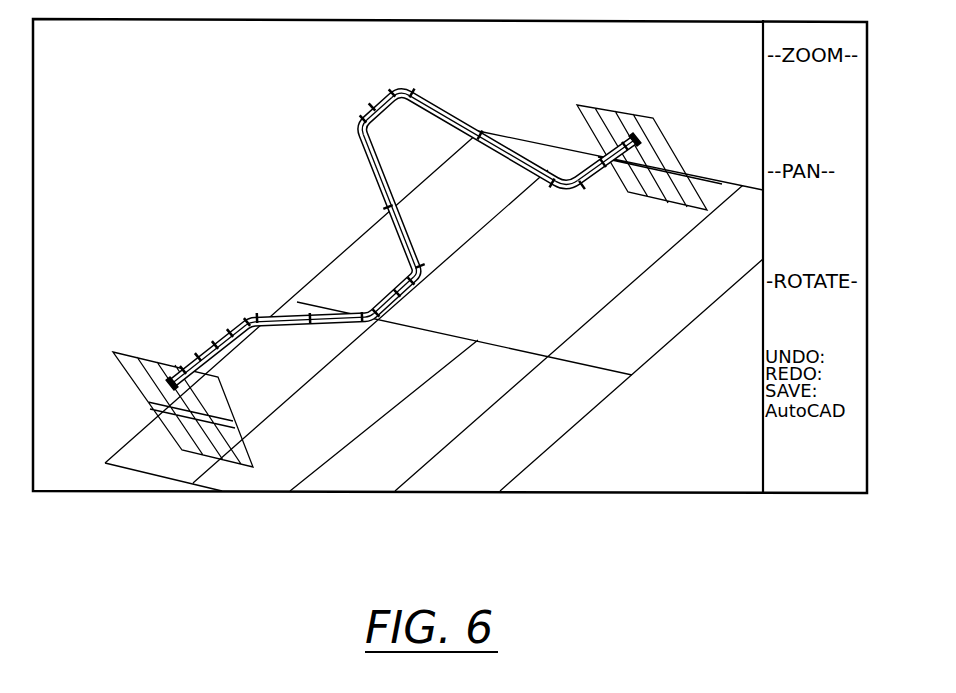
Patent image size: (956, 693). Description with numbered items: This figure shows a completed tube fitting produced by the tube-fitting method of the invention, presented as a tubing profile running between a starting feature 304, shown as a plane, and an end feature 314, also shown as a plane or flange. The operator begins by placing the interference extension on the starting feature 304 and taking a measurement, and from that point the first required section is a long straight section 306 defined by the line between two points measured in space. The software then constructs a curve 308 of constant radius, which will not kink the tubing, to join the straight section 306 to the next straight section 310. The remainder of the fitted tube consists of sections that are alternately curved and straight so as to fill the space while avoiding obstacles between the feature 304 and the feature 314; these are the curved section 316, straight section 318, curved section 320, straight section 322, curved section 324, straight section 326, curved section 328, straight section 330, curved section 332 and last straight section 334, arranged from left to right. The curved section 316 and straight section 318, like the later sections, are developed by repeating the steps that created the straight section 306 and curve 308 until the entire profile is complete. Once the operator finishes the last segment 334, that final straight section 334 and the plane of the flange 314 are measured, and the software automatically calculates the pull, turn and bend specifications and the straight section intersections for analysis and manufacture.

The starting feature 304 is at (167, 362).
The long straight section 306 is at (213, 340).
The curve 308 is at (250, 316).
The straight section 310 is at (297, 302).
The end feature 314 is at (580, 117).
The curved section 316 is at (371, 312).
The straight section 318 is at (397, 292).
The curved section 320 is at (428, 277).
The straight section 322 is at (373, 177).
The curved section 324 is at (357, 124).
The straight section 326 is at (373, 105).
The curved section 328 is at (403, 88).
The straight section 330 is at (468, 117).
The curved section 332 is at (576, 193).
The last straight section 334 is at (612, 165).